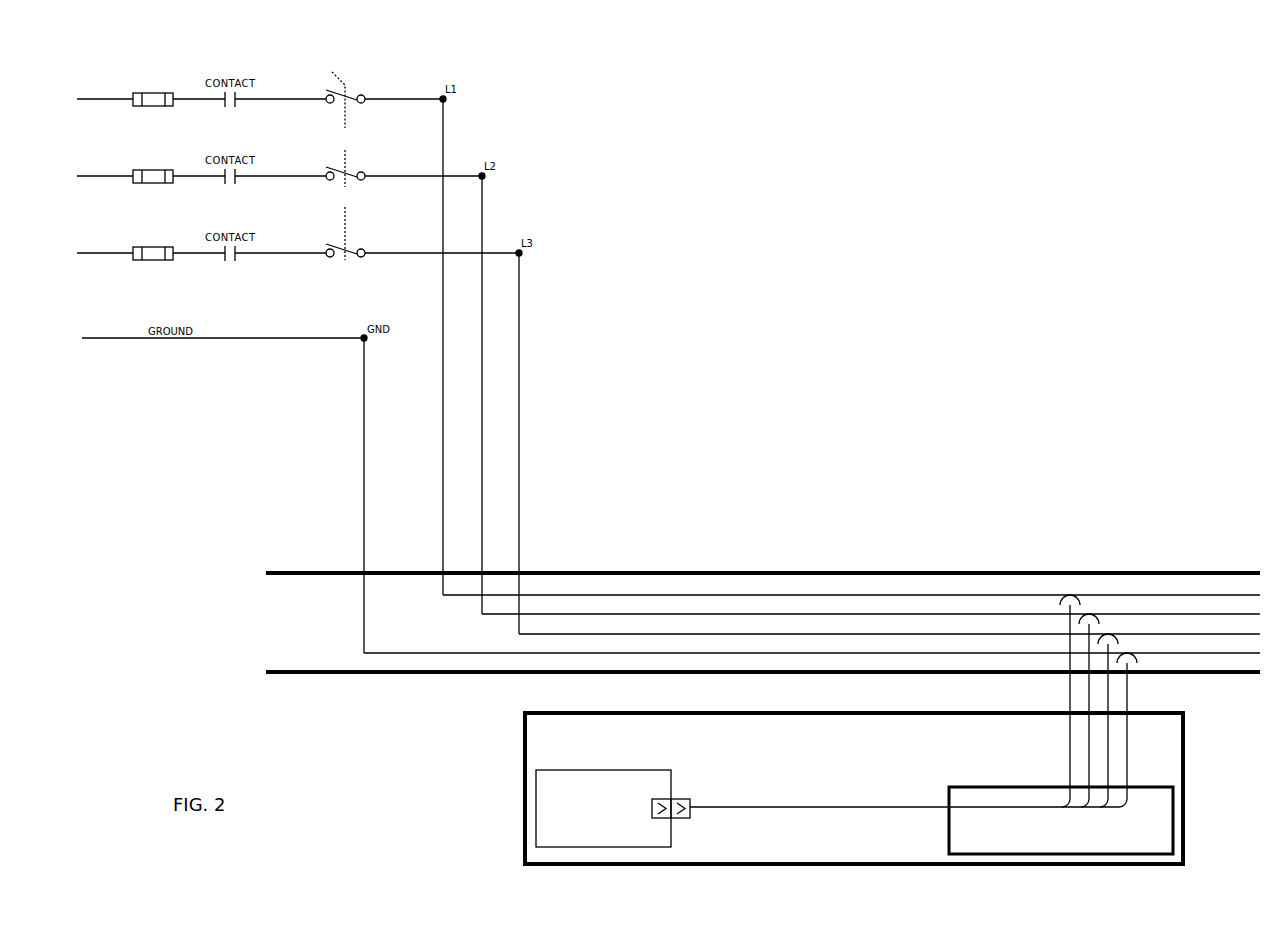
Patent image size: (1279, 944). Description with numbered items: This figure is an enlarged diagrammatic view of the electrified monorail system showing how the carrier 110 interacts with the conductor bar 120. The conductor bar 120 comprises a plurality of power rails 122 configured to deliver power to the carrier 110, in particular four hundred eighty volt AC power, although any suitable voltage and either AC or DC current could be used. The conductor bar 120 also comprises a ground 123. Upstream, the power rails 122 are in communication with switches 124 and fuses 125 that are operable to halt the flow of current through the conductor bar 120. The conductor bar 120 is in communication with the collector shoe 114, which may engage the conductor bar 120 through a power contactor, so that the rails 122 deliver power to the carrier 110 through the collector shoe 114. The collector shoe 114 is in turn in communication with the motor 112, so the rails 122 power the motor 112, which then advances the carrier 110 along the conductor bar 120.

The carrier 110 is at (542, 739).
The motor 112 is at (543, 814).
The collector shoe 114 is at (958, 802).
The conductor bar 120 is at (993, 588).
The power rails 122 is at (633, 593).
The ground 123 is at (544, 650).
The switches 124 is at (362, 95).
The fuses 125 is at (165, 73).